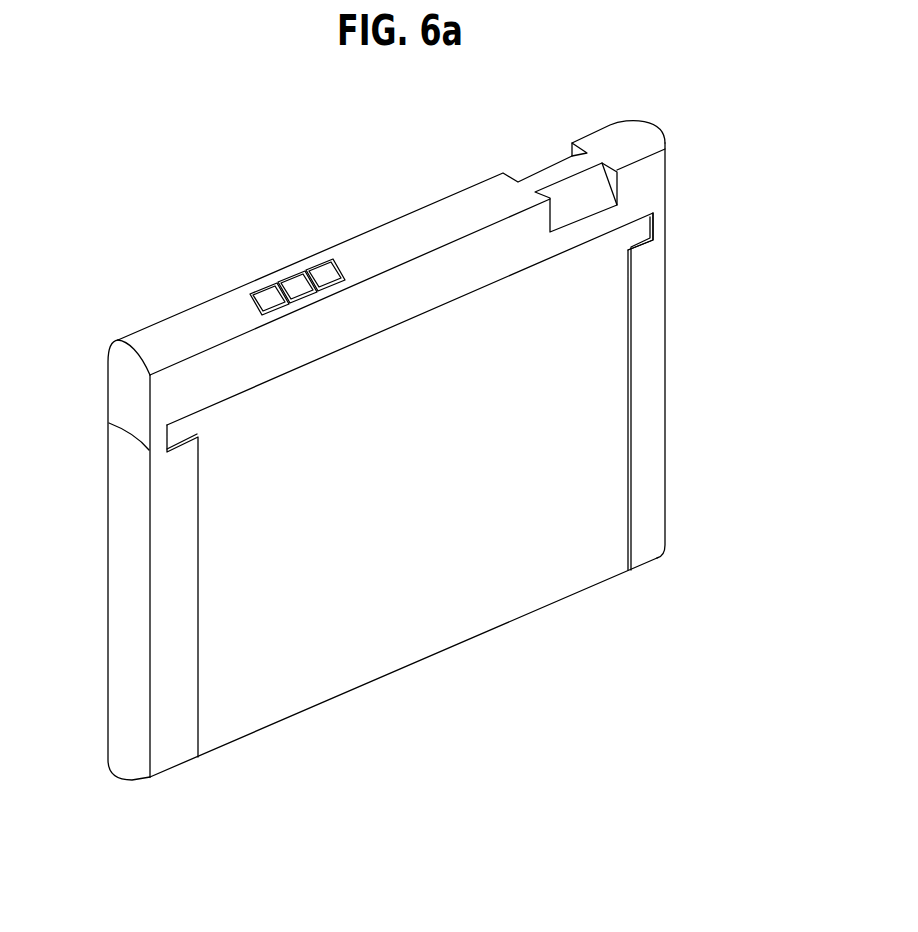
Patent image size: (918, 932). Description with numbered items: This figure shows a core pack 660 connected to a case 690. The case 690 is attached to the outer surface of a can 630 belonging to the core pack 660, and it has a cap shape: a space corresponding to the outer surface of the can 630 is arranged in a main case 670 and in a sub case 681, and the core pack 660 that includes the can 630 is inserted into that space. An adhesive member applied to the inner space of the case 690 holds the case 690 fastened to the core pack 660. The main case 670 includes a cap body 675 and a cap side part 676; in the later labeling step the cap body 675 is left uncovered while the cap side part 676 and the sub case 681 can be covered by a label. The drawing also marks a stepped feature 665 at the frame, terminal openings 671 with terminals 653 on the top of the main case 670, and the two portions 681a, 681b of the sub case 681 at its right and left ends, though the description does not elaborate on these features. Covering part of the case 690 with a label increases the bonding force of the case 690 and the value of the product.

The case 690 is at (150, 275).
The main case 670 is at (440, 208).
The cap body 675 is at (644, 133).
The cap side part 676 is at (656, 182).
The core pack 660 is at (360, 705).
The can 630 is at (482, 615).
The stepped portion 665 is at (668, 217).
The terminal openings 671 is at (263, 292).
The terminals 653 is at (313, 267).
The sub case 681 is at (732, 653).
The first side surface portion 681a is at (640, 547).
The second side surface portion 681b is at (132, 753).